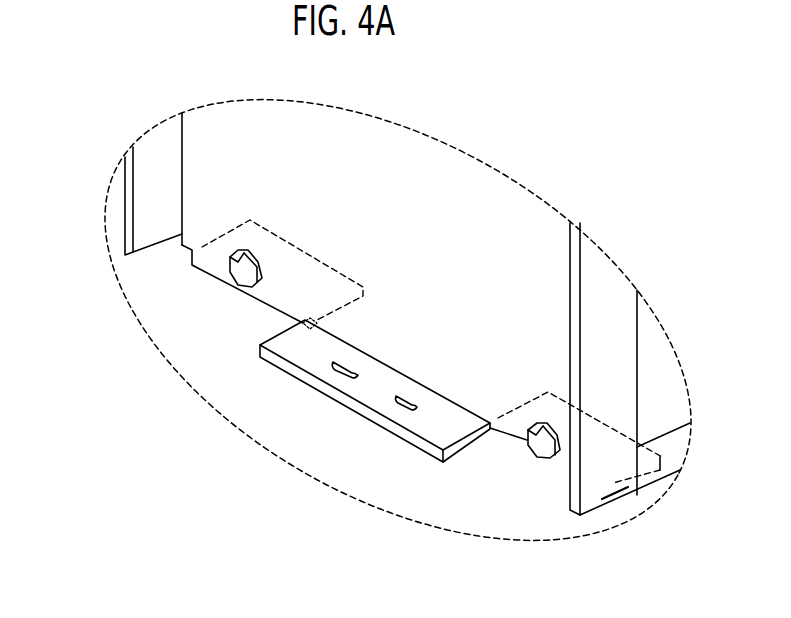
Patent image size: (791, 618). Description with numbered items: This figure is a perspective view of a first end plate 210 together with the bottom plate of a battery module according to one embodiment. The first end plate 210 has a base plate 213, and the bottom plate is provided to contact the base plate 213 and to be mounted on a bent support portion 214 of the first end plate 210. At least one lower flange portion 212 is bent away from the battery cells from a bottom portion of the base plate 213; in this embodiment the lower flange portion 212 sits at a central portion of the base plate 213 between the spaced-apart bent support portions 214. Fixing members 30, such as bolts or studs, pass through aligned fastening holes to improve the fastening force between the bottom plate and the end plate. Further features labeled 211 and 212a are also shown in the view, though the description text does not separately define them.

The first end plate 210 is at (346, 174).
The side panel 211 is at (155, 198).
The lower flange portion 212 is at (353, 387).
The auxiliary fastening slot 212a is at (397, 397).
The base plate 213 is at (250, 195).
The bent support portion 214 is at (553, 413).
The fixing member 30 is at (490, 423).